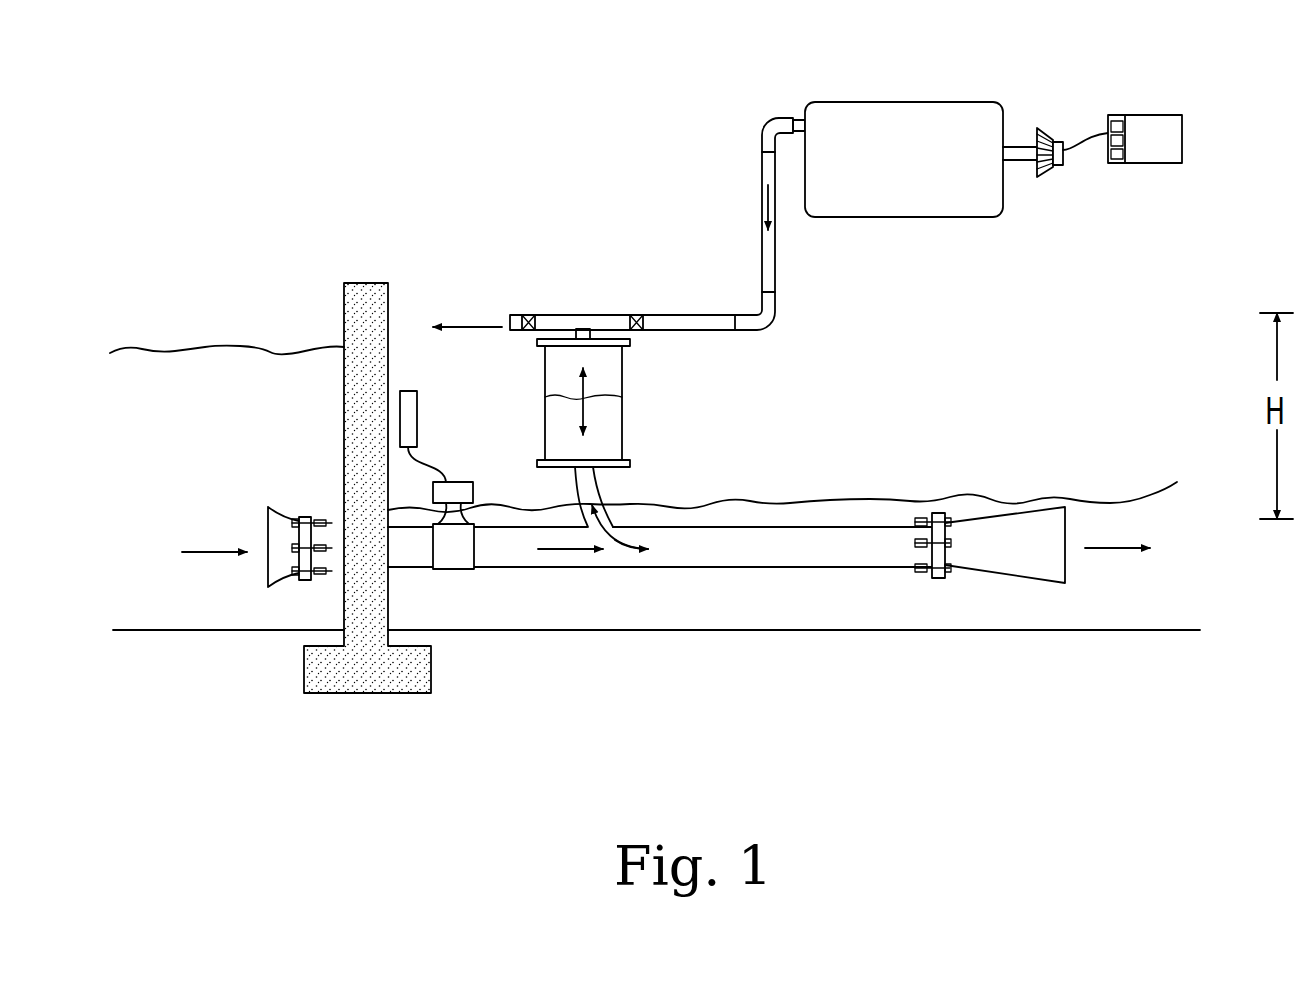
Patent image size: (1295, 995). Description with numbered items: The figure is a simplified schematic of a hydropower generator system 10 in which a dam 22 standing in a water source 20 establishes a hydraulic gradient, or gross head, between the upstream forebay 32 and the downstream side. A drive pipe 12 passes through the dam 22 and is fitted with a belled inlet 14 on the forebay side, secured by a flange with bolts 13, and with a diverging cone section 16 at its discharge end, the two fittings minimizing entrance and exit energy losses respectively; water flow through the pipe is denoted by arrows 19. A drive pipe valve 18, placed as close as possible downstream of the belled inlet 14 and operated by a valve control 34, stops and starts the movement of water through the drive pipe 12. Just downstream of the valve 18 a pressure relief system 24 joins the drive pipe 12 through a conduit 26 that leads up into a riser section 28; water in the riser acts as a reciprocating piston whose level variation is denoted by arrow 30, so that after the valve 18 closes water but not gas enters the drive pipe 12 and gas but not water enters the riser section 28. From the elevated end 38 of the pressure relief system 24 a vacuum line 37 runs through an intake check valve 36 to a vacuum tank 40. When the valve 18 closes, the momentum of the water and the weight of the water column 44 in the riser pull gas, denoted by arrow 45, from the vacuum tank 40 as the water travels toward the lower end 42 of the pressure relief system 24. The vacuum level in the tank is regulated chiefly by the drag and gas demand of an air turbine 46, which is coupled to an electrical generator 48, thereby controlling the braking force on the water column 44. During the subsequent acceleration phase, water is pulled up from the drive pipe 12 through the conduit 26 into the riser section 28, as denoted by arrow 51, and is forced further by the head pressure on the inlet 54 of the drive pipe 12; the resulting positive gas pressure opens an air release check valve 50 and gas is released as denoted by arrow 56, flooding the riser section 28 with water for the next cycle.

The hydropower generator system 10 is at (876, 588).
The drive pipe 12 is at (340, 530).
The flange bolts 13 is at (305, 582).
The belled inlet 14 is at (268, 520).
The diverging cone section 16 is at (1040, 583).
The drive pipe valve 18 is at (455, 560).
The arrows 19 is at (207, 552).
The water source 20 is at (265, 313).
The dam 22 is at (385, 318).
The pressure relief system 24 is at (645, 470).
The conduit 26 is at (580, 500).
The riser section 28 is at (648, 403).
The arrow 30 is at (575, 395).
The forebay 32 is at (176, 434).
The valve control 34 is at (417, 410).
The intake check valve 36 is at (636, 315).
The upper pipe 37 is at (583, 315).
The elevated end 38 is at (607, 355).
The vacuum tank 40 is at (1005, 120).
The lower end 42 is at (610, 457).
The water column 44 is at (545, 440).
The arrow 45 is at (762, 205).
The air turbine 46 is at (1045, 180).
The electrical generator 48 is at (1160, 165).
The air release check valve 50 is at (527, 315).
The arrow 51 is at (615, 555).
The inlet 54 is at (562, 556).
The arrow 56 is at (478, 321).